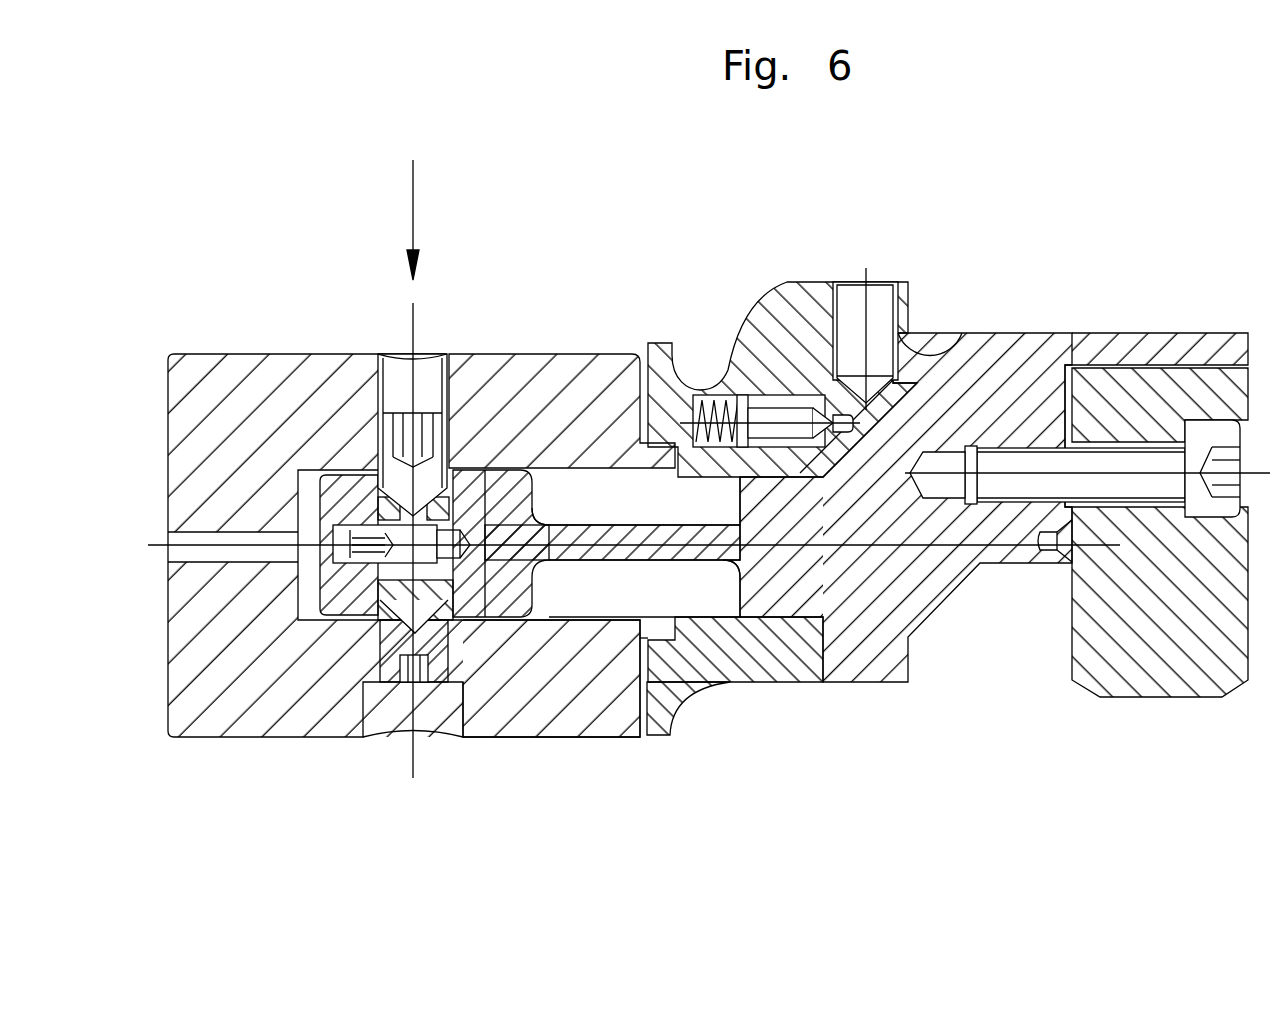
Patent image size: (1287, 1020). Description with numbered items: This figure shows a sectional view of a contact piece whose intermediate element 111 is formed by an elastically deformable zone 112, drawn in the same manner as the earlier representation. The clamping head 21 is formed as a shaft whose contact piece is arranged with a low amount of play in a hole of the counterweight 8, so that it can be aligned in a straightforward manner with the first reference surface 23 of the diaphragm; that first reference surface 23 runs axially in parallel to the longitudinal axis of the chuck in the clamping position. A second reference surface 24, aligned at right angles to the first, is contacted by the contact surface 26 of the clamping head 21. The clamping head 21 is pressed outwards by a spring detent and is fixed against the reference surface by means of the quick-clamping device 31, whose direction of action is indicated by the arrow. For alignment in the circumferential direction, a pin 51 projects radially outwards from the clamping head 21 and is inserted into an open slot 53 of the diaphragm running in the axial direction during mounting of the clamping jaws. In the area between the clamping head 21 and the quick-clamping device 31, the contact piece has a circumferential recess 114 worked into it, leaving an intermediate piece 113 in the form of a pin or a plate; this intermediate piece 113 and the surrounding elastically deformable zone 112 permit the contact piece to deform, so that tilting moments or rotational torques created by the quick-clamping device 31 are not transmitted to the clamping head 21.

The counterweight 8 is at (255, 354).
The quick-clamping device 31 is at (410, 201).
The elastically deformable zone 112 is at (595, 510).
The pin 51 is at (838, 309).
The open slot 53 is at (900, 342).
The first reference surface 23 is at (962, 322).
The clamping head 21 is at (1045, 333).
The intermediate element 111 is at (555, 680).
The intermediate piece 113 is at (617, 550).
The circumferential recess 114 is at (738, 567).
The contact surface 26 is at (822, 653).
The second reference surface 24 is at (826, 662).